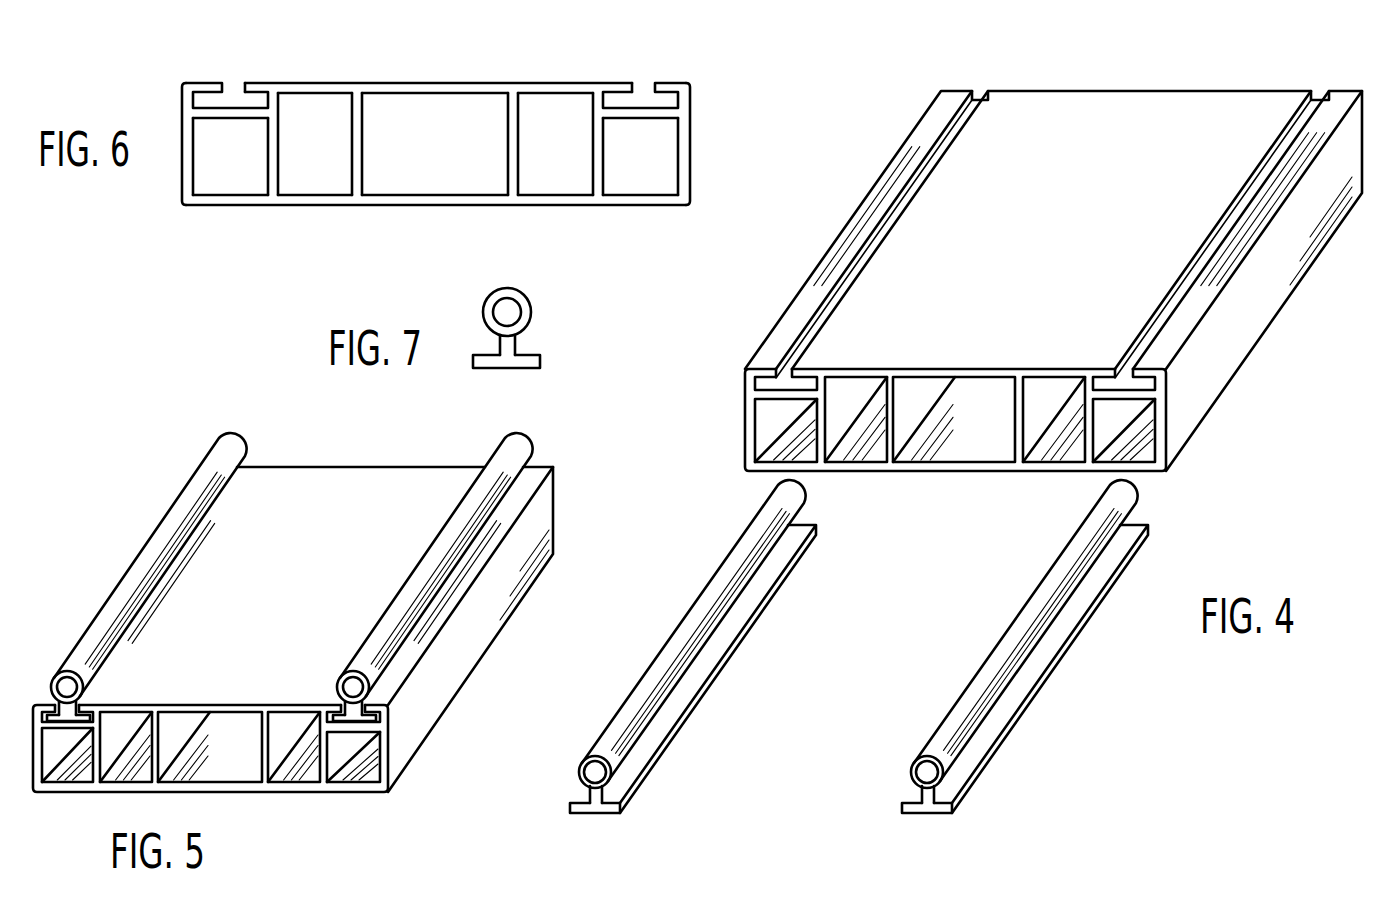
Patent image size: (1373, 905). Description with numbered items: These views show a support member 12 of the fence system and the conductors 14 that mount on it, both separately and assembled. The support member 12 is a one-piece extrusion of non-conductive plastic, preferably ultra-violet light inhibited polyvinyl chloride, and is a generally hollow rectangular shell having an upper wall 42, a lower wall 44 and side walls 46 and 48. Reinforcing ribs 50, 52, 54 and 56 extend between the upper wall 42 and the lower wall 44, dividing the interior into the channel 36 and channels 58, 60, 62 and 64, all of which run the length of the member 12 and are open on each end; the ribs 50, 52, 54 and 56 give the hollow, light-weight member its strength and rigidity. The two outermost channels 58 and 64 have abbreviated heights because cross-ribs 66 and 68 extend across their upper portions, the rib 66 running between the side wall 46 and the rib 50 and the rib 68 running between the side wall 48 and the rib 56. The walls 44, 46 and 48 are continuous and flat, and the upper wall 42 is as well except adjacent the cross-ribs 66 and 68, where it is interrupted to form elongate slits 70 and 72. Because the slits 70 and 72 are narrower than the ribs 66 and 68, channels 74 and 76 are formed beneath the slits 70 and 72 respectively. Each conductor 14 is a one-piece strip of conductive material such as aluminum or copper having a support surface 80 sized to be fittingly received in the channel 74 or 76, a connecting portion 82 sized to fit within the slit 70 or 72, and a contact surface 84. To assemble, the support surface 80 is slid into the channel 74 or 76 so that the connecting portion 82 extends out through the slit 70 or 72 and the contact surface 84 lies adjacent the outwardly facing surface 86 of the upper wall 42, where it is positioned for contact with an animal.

In FIG. 6, the support member 12 is at (429, 146).
In FIG. 4, the support member 12 is at (1053, 293).
In FIG. 7, the conductor 14 is at (500, 342).
In FIG. 5, the conductor 14 is at (226, 436).
In FIG. 4, the conductor 14 is at (842, 676).
In FIG. 6, the channel 36 is at (460, 105).
In FIG. 5, the channel 36 is at (214, 771).
In FIG. 4, the channel 36 is at (972, 434).
In FIG. 6, the upper wall 42 is at (430, 90).
In FIG. 6, the lower wall 44 is at (444, 205).
In FIG. 6, the side wall 46 is at (182, 158).
In FIG. 6, the side wall 48 is at (691, 176).
In FIG. 6, the reinforcing rib 50 is at (287, 180).
In FIG. 6, the reinforcing rib 52 is at (368, 184).
In FIG. 6, the reinforcing rib 54 is at (524, 180).
In FIG. 6, the reinforcing rib 56 is at (607, 180).
In FIG. 6, the channel 58 is at (228, 182).
In FIG. 6, the channel 60 is at (324, 180).
In FIG. 6, the channel 62 is at (567, 180).
In FIG. 6, the channel 64 is at (652, 182).
In FIG. 6, the cross-rib 66 is at (199, 126).
In FIG. 6, the cross-rib 68 is at (660, 128).
In FIG. 6, the elongate slit 70 is at (231, 80).
In FIG. 4, the elongate slit 70 is at (786, 376).
In FIG. 6, the elongate slit 72 is at (646, 93).
In FIG. 4, the elongate slit 72 is at (1125, 376).
In FIG. 6, the channel 74 is at (252, 95).
In FIG. 6, the channel 76 is at (662, 100).
In FIG. 7, the support surface 80 is at (519, 368).
In FIG. 4, the support surface 80 is at (637, 795).
In FIG. 7, the connecting portion 82 is at (518, 345).
In FIG. 4, the connecting portion 82 is at (592, 816).
In FIG. 7, the contact surface 84 is at (531, 313).
In FIG. 4, the contact surface 84 is at (670, 638).
In FIG. 6, the outwardly facing surface 86 is at (352, 90).
In FIG. 4, the outwardly facing surface 86 is at (900, 246).